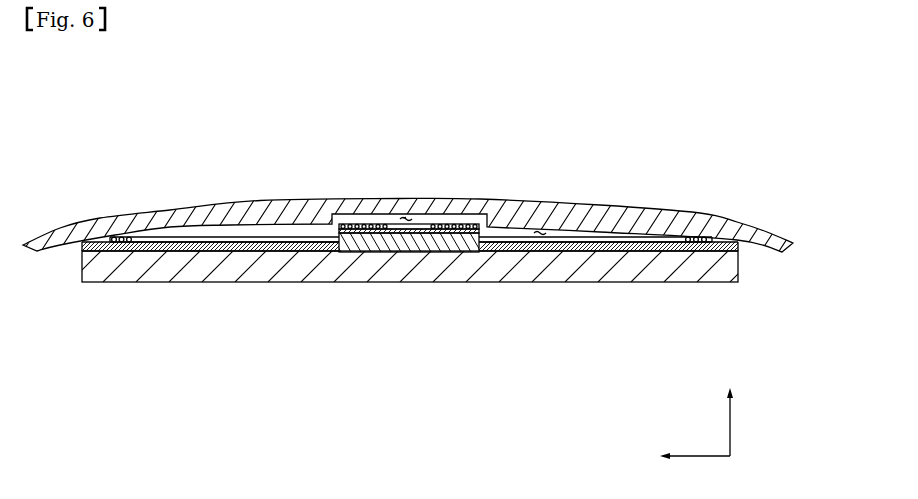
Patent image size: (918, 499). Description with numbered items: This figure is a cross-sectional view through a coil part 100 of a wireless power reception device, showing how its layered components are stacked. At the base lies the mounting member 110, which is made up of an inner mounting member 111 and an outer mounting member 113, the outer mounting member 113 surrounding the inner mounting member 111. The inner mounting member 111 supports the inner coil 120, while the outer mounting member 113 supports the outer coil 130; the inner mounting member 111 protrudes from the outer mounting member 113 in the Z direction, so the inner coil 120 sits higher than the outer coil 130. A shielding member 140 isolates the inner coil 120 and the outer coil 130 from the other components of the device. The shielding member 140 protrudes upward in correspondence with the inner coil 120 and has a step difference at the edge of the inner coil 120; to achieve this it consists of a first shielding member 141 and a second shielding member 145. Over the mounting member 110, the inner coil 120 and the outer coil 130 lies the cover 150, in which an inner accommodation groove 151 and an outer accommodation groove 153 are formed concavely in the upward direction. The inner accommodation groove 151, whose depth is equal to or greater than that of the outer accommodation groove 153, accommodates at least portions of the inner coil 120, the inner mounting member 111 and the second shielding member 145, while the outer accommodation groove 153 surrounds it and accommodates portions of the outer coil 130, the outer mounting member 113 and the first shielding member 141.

The coil part 100 is at (56, 79).
The mounting member 110 is at (272, 229).
The inner mounting member 111 is at (369, 233).
The outer mounting member 113 is at (231, 262).
The inner coil 120 is at (352, 224).
The outer coil 130 is at (161, 243).
The shielding member 140 is at (428, 260).
The first shielding member 141 is at (512, 256).
The second shielding member 145 is at (438, 231).
The cover 150 is at (633, 220).
The inner accommodation groove 151 is at (408, 216).
The outer accommodation groove 153 is at (542, 230).